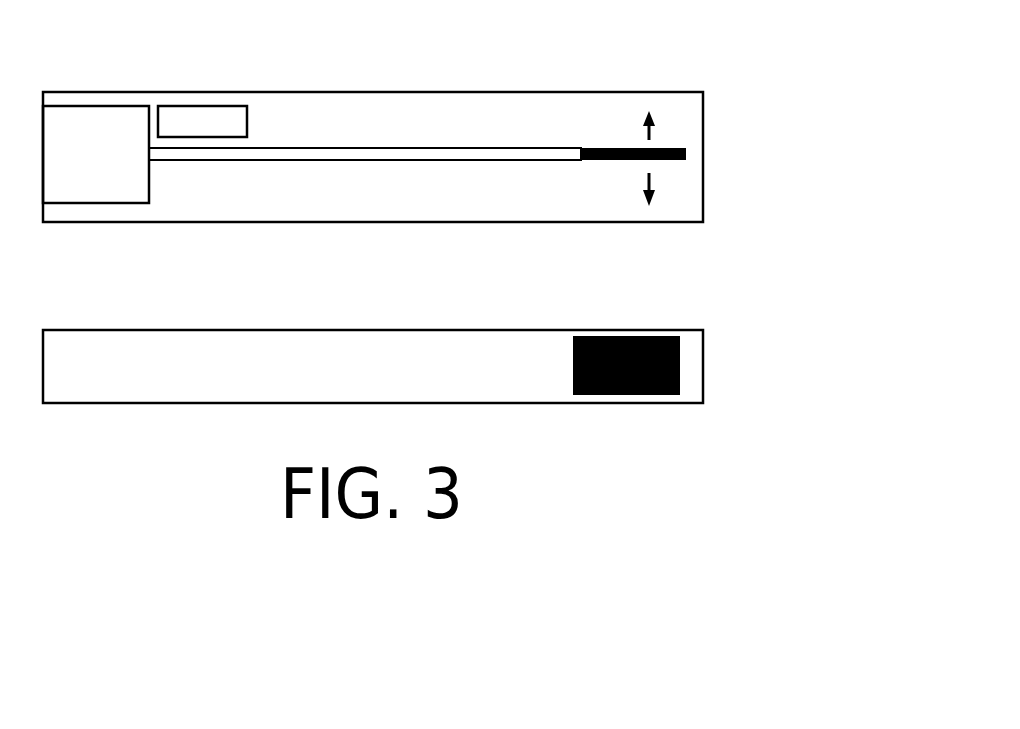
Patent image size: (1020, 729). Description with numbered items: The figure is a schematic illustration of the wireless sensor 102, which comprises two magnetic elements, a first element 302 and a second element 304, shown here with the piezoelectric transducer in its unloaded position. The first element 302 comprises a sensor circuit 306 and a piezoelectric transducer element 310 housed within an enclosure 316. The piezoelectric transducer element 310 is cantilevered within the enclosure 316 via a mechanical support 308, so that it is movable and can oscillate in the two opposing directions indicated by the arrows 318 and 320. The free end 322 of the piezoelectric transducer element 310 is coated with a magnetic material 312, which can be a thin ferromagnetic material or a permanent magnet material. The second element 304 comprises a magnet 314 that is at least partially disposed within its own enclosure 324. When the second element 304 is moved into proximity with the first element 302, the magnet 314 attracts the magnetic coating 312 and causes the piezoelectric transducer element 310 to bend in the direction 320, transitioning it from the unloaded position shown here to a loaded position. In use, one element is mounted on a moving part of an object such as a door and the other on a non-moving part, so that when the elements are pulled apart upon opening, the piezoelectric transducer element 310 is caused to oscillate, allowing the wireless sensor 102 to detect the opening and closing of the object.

The wireless sensor 102 is at (630, 60).
The first element 302 is at (373, 116).
The second element 304 is at (373, 351).
The sensor circuit 306 is at (220, 131).
The mechanical support 308 is at (118, 165).
The piezoelectric transducer element 310 is at (403, 161).
The magnetic material 312 is at (570, 160).
The magnet 314 is at (573, 360).
The enclosure 316 is at (84, 92).
The direction arrow 318 is at (667, 127).
The direction arrow 320 is at (667, 189).
The end of piezoelectric transducer 322 is at (604, 141).
The enclosure 324 is at (84, 330).